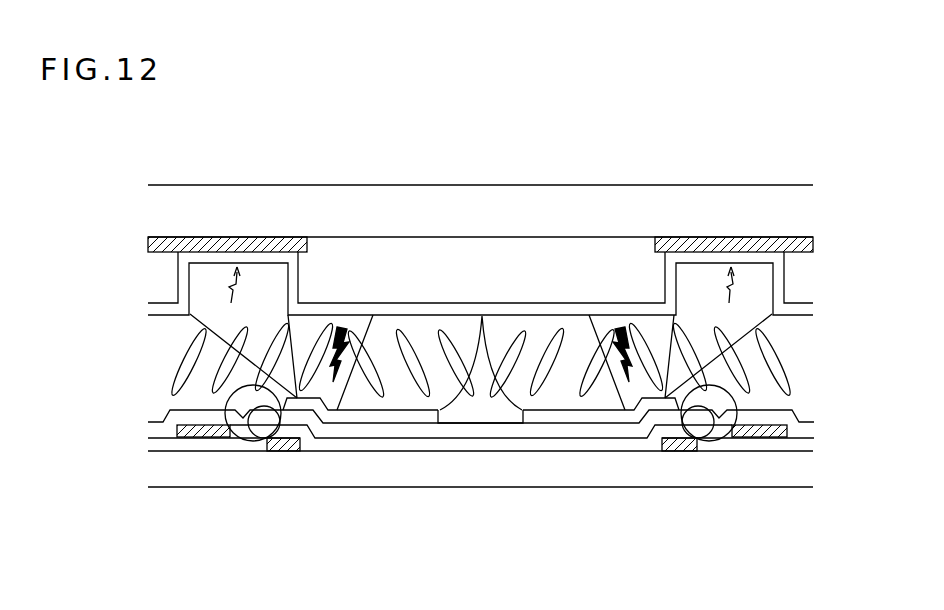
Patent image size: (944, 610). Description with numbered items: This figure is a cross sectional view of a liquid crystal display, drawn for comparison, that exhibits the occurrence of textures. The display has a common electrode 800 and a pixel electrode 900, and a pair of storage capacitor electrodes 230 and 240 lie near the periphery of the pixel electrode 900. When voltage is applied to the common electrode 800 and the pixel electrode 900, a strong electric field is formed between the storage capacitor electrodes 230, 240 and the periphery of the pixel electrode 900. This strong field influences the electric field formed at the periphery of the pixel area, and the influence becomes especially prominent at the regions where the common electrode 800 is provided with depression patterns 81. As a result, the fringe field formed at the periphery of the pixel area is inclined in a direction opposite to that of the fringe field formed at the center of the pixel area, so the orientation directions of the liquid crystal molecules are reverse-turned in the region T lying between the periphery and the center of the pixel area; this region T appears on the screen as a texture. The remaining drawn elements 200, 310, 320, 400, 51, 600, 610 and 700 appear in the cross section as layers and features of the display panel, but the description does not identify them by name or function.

The lower substrate 200 is at (527, 482).
The storage capacitor electrode 230 is at (680, 453).
The storage capacitor electrode 240 is at (283, 452).
The gate insulating layer 310 is at (598, 451).
The passivation layer 320 is at (402, 433).
The data line 400 is at (757, 438).
The opening of pixel electrode 51 is at (493, 415).
The depression pattern 81 is at (483, 300).
The upper substrate 600 is at (490, 202).
The color filter 610 is at (552, 247).
The light blocking member 700 is at (215, 237).
The common electrode 800 is at (443, 312).
The pixel electrode 900 is at (805, 364).
The region T is at (350, 316).